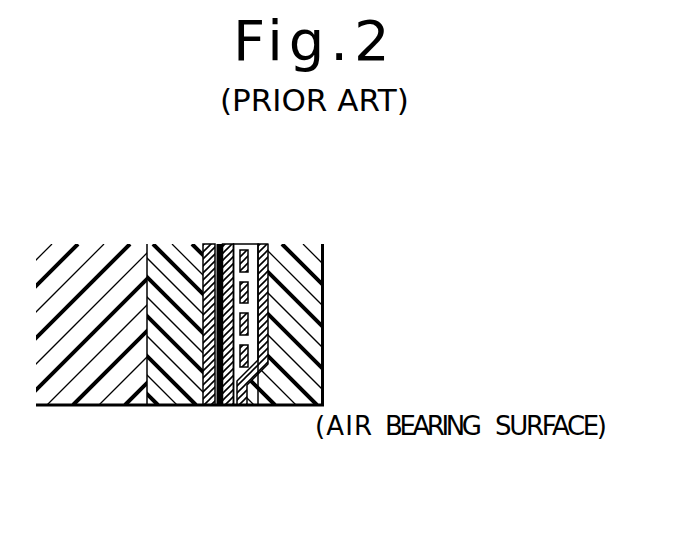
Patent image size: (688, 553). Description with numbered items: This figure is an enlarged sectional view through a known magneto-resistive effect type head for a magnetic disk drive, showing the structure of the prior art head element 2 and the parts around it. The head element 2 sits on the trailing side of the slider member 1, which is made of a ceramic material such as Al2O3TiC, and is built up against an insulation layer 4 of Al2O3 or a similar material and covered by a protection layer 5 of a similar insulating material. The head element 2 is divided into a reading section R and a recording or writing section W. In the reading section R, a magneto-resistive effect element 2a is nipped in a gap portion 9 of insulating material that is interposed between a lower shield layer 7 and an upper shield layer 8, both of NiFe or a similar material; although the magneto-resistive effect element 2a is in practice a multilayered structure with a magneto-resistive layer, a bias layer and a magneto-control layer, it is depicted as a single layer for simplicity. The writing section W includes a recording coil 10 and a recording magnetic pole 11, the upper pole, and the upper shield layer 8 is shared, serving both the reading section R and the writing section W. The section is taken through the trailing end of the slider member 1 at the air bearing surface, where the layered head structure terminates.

The slider member 1 is at (82, 246).
The head element 2 is at (242, 363).
The magneto-resistive effect element 2a is at (219, 408).
The insulation layer 4 is at (182, 248).
The protection layer 5 is at (296, 250).
The lower shield layer 7 is at (210, 408).
The upper shield layer 8 is at (234, 408).
The gap portion 9 is at (218, 246).
The recording coil 10 is at (250, 318).
The recording magnetic pole 11 is at (268, 346).
The reading section R is at (176, 330).
The writing section W is at (289, 331).